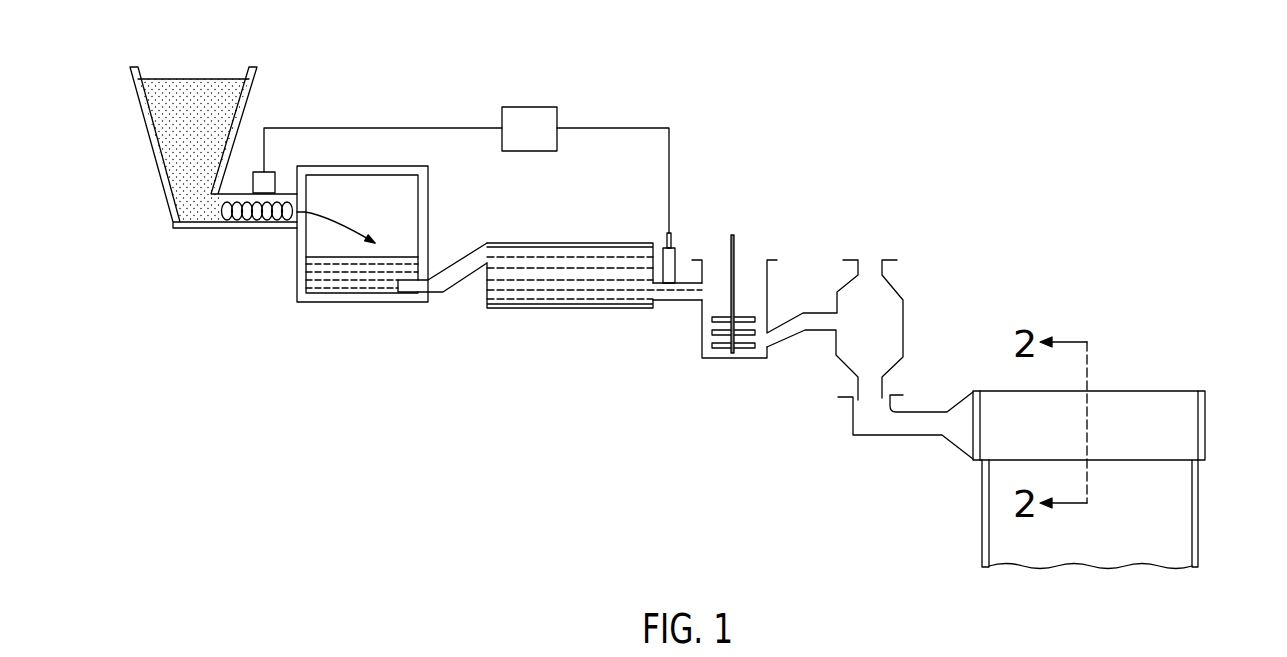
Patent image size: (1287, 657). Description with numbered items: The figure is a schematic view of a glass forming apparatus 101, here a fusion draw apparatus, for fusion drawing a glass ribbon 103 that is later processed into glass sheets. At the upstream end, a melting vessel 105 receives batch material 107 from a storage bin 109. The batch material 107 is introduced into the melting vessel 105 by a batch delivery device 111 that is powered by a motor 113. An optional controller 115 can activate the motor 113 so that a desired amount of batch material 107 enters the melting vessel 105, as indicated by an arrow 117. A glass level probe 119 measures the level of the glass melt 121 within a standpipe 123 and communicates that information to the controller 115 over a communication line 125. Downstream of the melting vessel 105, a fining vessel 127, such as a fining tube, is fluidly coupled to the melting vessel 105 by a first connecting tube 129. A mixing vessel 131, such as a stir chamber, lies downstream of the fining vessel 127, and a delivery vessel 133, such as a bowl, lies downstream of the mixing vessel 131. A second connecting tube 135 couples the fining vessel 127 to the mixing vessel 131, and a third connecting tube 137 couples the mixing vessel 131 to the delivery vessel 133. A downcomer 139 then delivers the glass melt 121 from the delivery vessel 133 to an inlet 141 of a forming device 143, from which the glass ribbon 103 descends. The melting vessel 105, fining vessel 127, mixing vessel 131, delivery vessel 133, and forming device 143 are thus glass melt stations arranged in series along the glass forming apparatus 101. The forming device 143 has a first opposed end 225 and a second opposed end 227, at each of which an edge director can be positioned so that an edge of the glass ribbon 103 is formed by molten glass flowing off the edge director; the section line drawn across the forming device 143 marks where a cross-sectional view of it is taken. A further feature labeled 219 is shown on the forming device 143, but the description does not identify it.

The glass forming apparatus 101 is at (927, 122).
The glass ribbon 103 is at (990, 542).
The melting vessel 105 is at (355, 288).
The batch material 107 is at (185, 78).
The storage bin 109 is at (152, 148).
The batch delivery device 111 is at (247, 217).
The motor 113 is at (273, 172).
The controller 115 is at (527, 107).
The arrow 117 is at (322, 210).
The glass level probe 119 is at (662, 235).
The glass melt 121 is at (397, 257).
The standpipe 123 is at (680, 253).
The communication line 125 is at (607, 128).
The fining vessel 127 is at (565, 240).
The first connecting tube 129 is at (462, 257).
The mixing vessel 131 is at (770, 283).
The delivery vessel 133 is at (907, 300).
The second connecting tube 135 is at (683, 300).
The third connecting tube 137 is at (792, 338).
The downcomer 139 is at (887, 385).
The inlet 141 is at (847, 417).
The forming device 143 is at (1130, 391).
The passage 219 is at (1132, 468).
The first opposed end 225 is at (980, 430).
The second opposed end 227 is at (1205, 415).